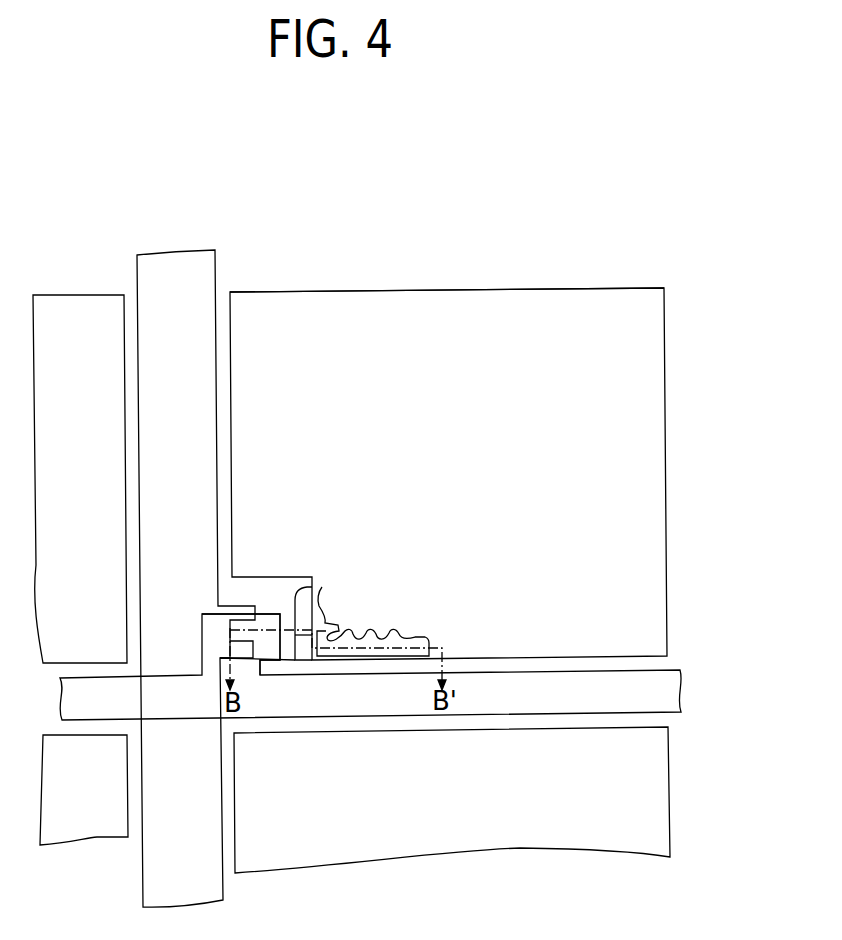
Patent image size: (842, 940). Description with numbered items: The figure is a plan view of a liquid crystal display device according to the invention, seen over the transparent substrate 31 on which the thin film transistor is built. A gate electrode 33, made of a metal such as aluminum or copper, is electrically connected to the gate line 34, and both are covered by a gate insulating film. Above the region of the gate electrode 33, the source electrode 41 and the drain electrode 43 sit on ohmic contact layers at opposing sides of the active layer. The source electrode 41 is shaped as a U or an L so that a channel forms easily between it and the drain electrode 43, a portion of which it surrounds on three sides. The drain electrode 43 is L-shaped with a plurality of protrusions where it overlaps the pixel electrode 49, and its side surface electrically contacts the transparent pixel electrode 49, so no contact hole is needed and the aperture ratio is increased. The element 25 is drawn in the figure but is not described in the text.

The gate line 25 is at (185, 270).
The transparent substrate 31 is at (597, 267).
The gate electrode 33 is at (282, 612).
The gate line 34 is at (682, 683).
The source electrode 41 is at (233, 612).
The drain electrode 43 is at (322, 593).
The pixel electrode 49 is at (664, 453).